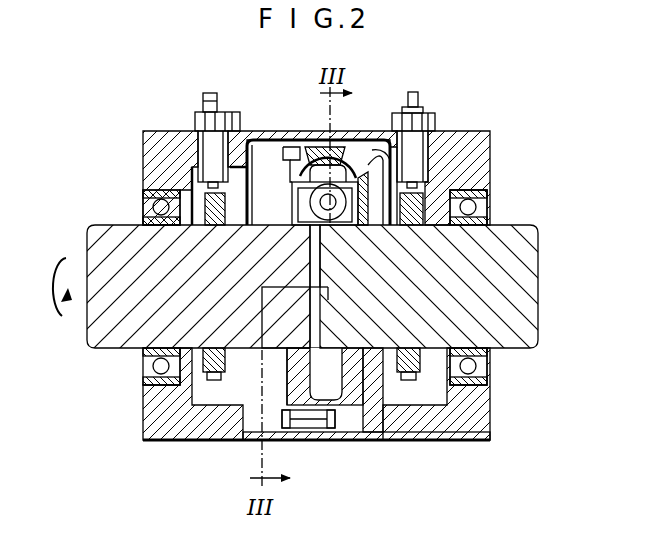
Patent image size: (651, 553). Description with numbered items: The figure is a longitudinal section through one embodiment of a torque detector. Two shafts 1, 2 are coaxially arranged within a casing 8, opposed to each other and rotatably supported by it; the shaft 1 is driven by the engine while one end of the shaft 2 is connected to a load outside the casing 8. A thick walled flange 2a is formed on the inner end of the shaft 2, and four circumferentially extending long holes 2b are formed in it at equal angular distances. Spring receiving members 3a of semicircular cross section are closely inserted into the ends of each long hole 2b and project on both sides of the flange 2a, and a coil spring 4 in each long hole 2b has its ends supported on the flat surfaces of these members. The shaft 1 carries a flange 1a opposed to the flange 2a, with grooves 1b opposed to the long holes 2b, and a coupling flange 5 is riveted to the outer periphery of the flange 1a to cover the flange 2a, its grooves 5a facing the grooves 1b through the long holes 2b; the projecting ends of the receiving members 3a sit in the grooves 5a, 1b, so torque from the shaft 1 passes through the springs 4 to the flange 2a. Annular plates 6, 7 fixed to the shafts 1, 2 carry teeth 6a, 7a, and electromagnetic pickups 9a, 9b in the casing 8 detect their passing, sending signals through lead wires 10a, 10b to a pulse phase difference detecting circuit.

The shaft 1 is at (97, 340).
The flange 1a is at (284, 430).
The grooves 1b is at (295, 185).
The shaft 2 is at (514, 350).
The thick walled flange 2a is at (318, 140).
The long holes 2b is at (330, 236).
The spring receiving member 3a is at (345, 172).
The coil spring 4 is at (305, 203).
The coupling flange 5 is at (366, 175).
The grooves 5a is at (385, 152).
The annular plate 6 is at (175, 380).
The teeth 6a is at (212, 365).
The annular plate 7 is at (432, 380).
The teeth 7a is at (418, 372).
The casing 8 is at (478, 140).
The electromagnetic pickup 9a is at (200, 124).
The electromagnetic pickup 9b is at (438, 125).
The lead wire 10a is at (209, 93).
The lead wire 10b is at (420, 98).